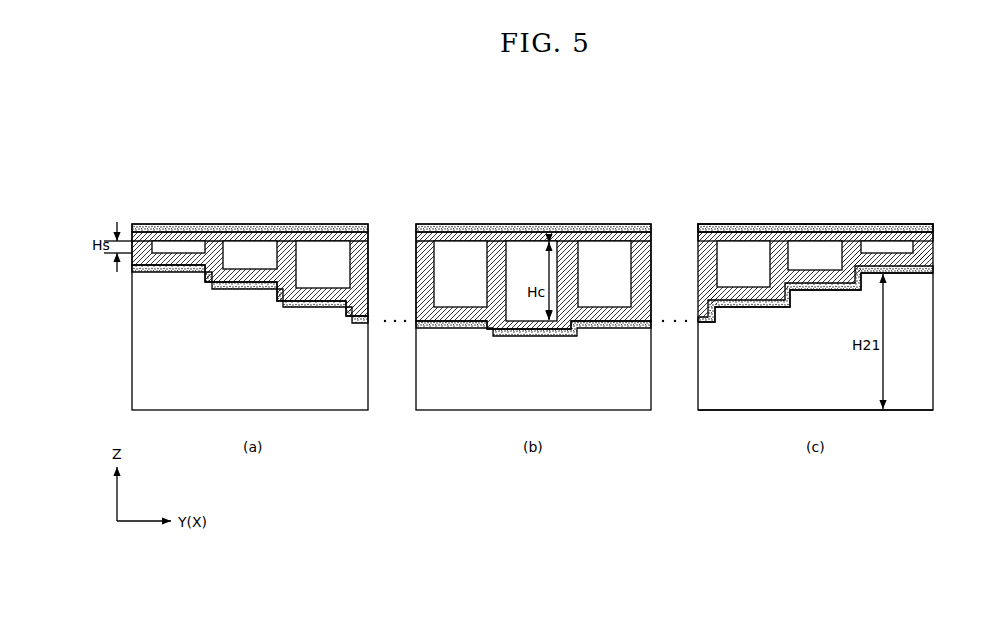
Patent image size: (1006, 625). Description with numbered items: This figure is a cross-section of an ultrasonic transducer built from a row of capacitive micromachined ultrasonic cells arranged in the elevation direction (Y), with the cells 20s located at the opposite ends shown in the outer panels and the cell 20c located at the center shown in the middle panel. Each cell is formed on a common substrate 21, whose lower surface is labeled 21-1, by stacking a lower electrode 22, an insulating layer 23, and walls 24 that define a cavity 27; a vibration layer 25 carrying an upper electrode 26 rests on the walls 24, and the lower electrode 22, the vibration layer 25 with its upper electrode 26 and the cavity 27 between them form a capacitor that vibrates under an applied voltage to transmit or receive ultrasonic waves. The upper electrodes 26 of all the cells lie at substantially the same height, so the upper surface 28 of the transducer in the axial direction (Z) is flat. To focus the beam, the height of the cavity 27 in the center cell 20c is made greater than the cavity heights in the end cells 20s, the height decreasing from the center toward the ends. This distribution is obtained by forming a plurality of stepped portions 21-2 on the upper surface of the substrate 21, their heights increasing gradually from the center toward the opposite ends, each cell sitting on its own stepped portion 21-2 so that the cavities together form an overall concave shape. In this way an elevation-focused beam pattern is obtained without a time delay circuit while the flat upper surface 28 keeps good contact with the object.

The ultrasonic cells located at opposite ends 20s is at (201, 221).
The ultrasonic cell located at the center 20c is at (527, 261).
The substrate 21 is at (927, 378).
The bottom surface of substrate 21-1 is at (909, 412).
The stepped portions 21-2 is at (905, 273).
The lower electrode 22 is at (933, 269).
The insulating layer 23 is at (933, 258).
The walls 24 is at (933, 246).
The vibration layer 25 is at (933, 237).
The upper electrode 26 is at (933, 228).
The cavity 27 is at (887, 245).
The upper surface of the ultrasonic transducer 28 is at (812, 226).